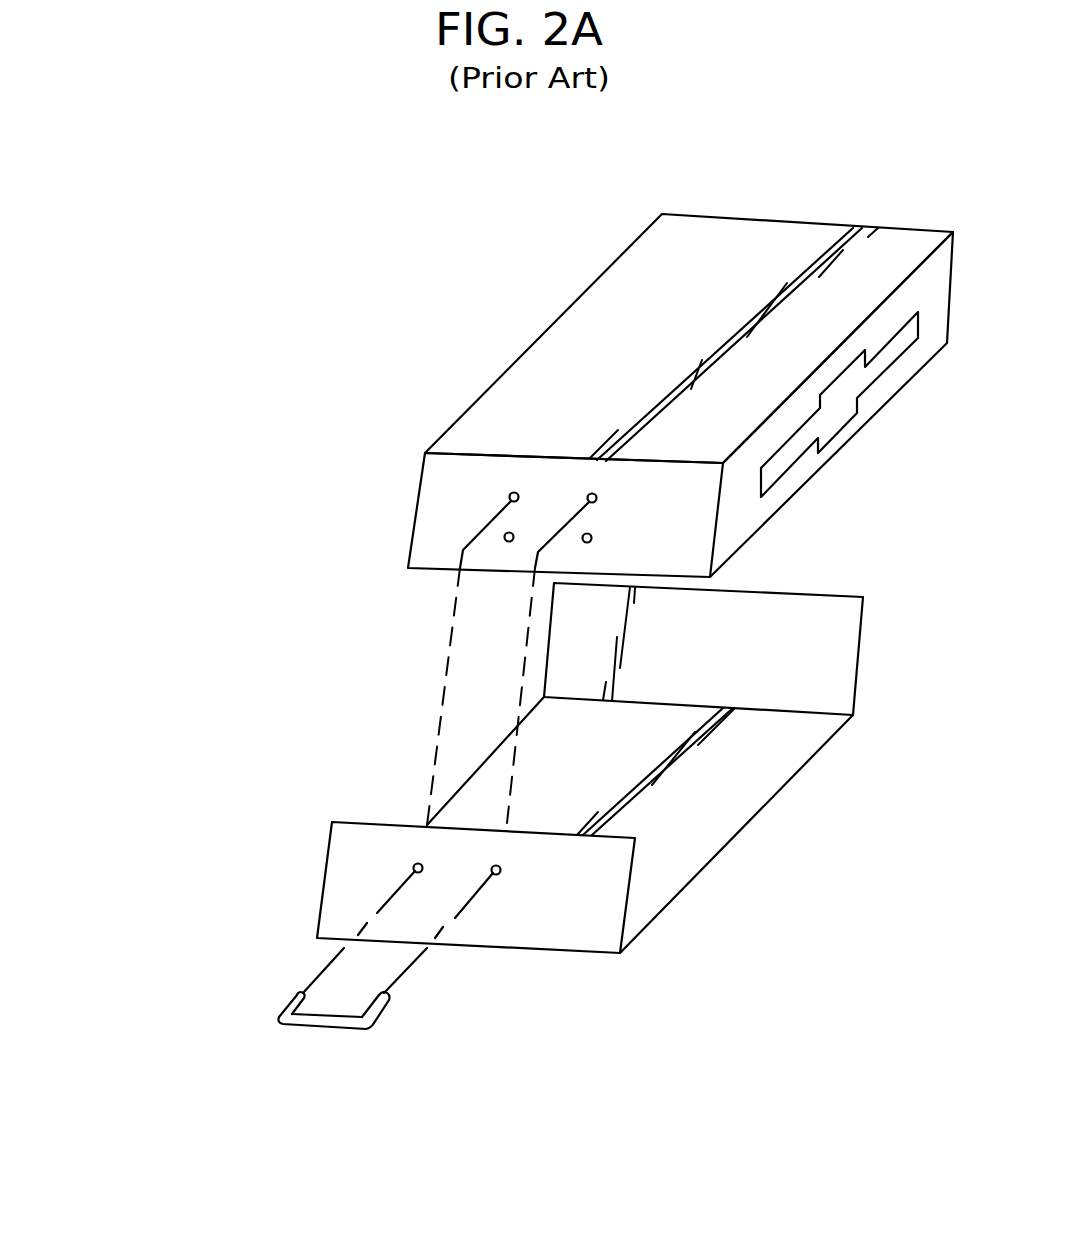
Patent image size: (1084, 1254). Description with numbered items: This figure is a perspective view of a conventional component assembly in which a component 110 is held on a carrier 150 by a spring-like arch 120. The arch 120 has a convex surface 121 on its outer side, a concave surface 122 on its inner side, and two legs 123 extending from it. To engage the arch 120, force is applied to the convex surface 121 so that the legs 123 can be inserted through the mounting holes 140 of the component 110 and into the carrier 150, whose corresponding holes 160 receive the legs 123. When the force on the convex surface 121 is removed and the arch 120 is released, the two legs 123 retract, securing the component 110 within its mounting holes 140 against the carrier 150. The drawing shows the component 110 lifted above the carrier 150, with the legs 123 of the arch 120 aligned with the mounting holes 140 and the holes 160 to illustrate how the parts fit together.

The component 110 is at (534, 343).
The mounting holes 140 is at (517, 486).
The carrier 150 is at (700, 873).
The lower contact holes 160 is at (500, 872).
The arch 120 is at (294, 976).
The convex surface 121 is at (313, 1023).
The concave surface 122 is at (398, 932).
The legs 123 is at (297, 993).